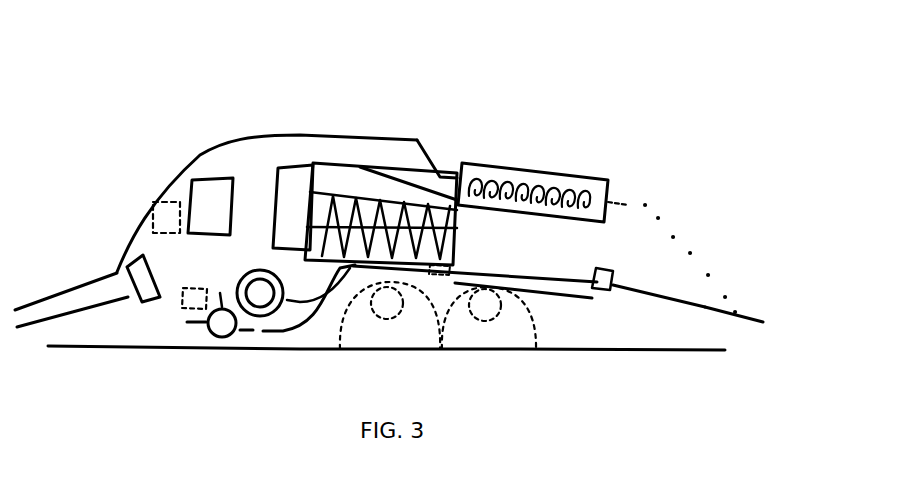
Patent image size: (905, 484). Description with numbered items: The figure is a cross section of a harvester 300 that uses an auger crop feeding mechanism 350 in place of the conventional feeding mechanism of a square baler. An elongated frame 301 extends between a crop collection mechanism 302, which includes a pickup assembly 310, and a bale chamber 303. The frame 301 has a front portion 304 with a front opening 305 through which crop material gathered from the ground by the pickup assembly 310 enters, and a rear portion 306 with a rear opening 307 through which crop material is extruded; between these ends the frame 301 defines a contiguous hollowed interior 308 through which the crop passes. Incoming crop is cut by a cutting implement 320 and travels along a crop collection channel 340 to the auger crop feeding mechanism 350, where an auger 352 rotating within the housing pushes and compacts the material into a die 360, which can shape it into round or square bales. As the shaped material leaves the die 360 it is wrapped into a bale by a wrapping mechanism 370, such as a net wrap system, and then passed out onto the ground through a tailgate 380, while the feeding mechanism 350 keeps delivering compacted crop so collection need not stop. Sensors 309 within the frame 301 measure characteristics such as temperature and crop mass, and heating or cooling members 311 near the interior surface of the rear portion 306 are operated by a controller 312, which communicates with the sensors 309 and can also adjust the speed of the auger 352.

The harvester 300 is at (470, 128).
The elongated frame 301 is at (443, 173).
The crop collection mechanism 302 is at (263, 368).
The bale chamber 303 is at (641, 209).
The front portion 304 is at (181, 370).
The front opening 305 is at (166, 332).
The rear portion 306 is at (790, 301).
The rear opening 307 is at (699, 274).
The hollowed interior 308 is at (498, 247).
The sensors 309 is at (642, 188).
The pickup assembly 310 is at (220, 323).
The heating or cooling members 311 is at (613, 290).
The controller 312 is at (163, 200).
The cutting implement 320 is at (260, 293).
The crop collection channel 340 is at (312, 310).
The auger crop feeding mechanism 350 is at (353, 167).
The auger 352 is at (390, 200).
The die 360 is at (545, 275).
The wrapping mechanism 370 is at (572, 183).
The tailgate 380 is at (683, 305).